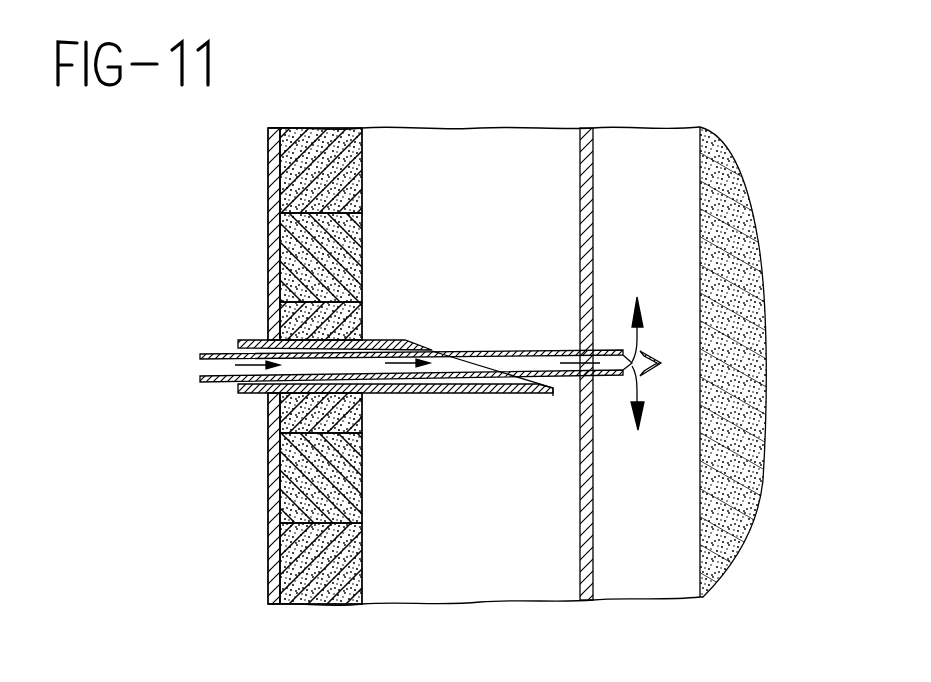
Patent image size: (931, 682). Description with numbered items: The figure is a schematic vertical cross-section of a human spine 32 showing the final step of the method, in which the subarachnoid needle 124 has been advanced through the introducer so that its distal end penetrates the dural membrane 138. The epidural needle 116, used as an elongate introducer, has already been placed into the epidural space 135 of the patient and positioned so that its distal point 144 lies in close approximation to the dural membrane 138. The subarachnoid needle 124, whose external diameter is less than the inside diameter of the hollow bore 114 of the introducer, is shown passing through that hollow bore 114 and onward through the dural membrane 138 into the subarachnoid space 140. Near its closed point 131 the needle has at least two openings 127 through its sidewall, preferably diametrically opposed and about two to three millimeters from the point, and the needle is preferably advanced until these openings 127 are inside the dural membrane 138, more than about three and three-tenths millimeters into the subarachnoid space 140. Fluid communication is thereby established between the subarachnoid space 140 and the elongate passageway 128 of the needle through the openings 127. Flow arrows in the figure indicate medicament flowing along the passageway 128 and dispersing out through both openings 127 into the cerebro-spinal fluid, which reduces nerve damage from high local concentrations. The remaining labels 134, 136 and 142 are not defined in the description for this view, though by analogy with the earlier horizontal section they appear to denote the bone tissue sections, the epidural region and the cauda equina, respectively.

The spine 32 is at (195, 153).
The hollow bore 114 is at (407, 393).
The epidural needle 116 is at (380, 340).
The subarachnoid needle 124 is at (203, 380).
The openings 127 is at (640, 352).
The elongate passageway 128 is at (200, 357).
The closed point 131 is at (661, 363).
The upper wall section 134 is at (270, 267).
The epidural space 135 is at (272, 420).
The first chamber 136 is at (482, 160).
The dural membrane 138 is at (593, 147).
The subarachnoid space 140 is at (660, 150).
The end wall 142 is at (740, 556).
The distal point 144 is at (556, 396).